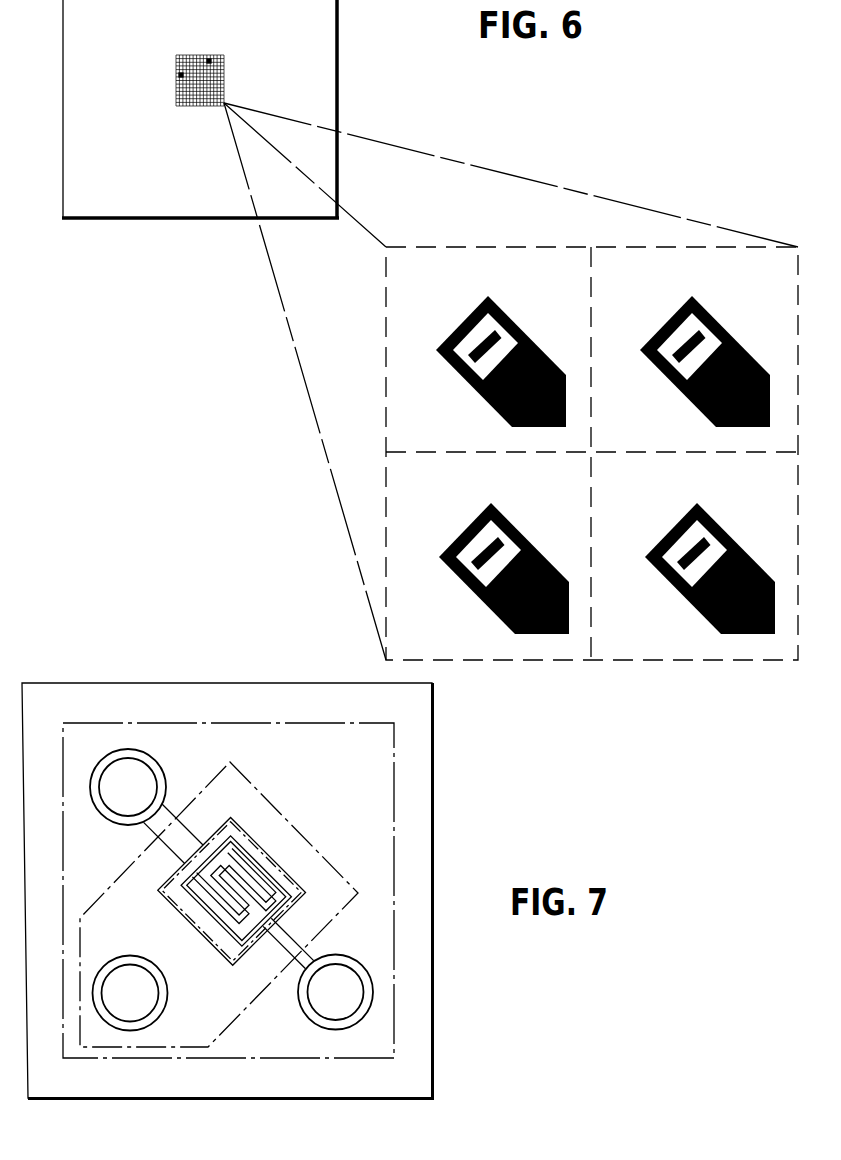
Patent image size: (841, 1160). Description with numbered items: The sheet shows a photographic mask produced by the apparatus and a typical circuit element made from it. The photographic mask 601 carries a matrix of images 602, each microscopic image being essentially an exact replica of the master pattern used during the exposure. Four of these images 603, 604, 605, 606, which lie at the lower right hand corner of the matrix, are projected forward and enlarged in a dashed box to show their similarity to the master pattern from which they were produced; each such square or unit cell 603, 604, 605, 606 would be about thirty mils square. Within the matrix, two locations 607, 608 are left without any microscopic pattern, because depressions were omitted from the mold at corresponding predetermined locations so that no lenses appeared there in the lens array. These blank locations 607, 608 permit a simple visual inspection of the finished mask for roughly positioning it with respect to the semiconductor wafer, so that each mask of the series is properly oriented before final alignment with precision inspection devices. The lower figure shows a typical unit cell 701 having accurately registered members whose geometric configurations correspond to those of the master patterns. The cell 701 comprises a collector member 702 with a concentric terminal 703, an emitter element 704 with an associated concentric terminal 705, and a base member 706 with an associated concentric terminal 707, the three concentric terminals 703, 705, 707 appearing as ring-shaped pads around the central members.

In FIG. 6, the photographic mask 601 is at (333, 78).
In FIG. 6, the matrix of images 602 is at (224, 80).
In FIG. 6, the image 603 is at (495, 250).
In FIG. 6, the image 604 is at (643, 253).
In FIG. 6, the image 605 is at (497, 655).
In FIG. 6, the image 606 is at (652, 650).
In FIG. 6, the location 607 is at (209, 60).
In FIG. 6, the location 608 is at (181, 75).
In FIG. 7, the unit cell 701 is at (188, 684).
In FIG. 7, the collector member 702 is at (308, 843).
In FIG. 7, the concentric terminal 703 is at (162, 990).
In FIG. 7, the emitter element 704 is at (268, 917).
In FIG. 7, the concentric terminal 705 is at (308, 1012).
In FIG. 7, the base member 706 is at (247, 835).
In FIG. 7, the concentric terminal 707 is at (158, 767).